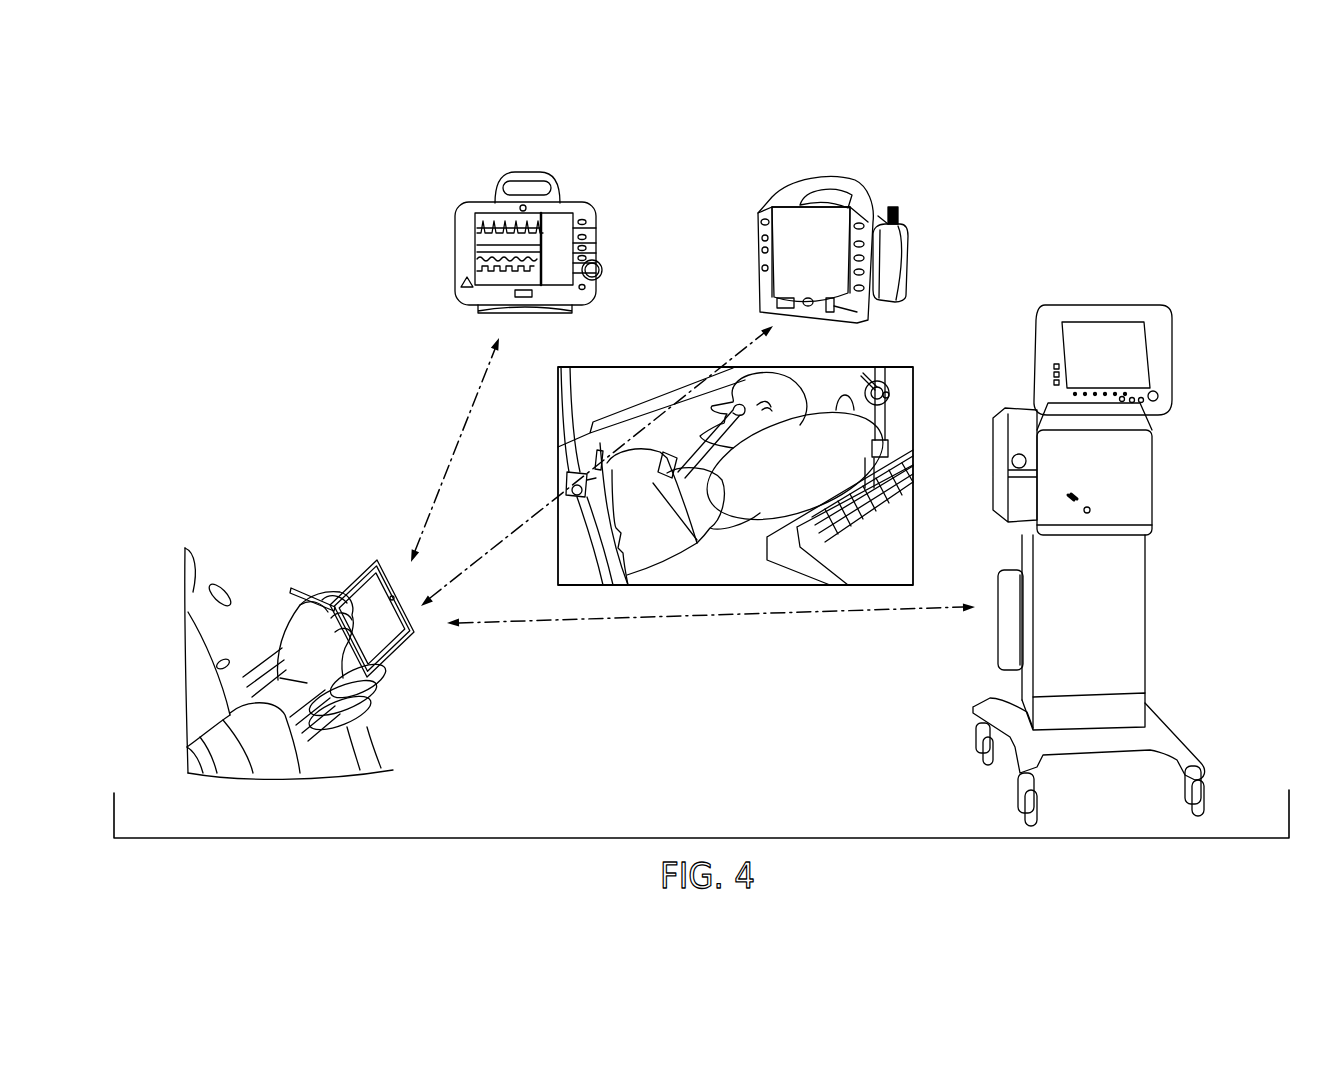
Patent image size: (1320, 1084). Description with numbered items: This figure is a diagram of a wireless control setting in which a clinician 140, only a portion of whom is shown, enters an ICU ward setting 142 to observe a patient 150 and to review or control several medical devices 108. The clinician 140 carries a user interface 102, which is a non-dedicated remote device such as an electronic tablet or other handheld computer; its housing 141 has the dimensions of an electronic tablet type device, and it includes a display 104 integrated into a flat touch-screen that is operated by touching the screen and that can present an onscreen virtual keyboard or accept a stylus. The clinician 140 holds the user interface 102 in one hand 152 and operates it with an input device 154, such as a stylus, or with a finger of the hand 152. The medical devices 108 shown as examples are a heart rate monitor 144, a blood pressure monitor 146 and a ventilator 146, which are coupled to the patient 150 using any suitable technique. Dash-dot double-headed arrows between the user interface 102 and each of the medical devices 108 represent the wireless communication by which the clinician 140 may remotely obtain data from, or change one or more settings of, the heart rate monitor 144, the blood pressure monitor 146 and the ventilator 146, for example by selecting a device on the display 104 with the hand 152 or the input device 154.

The user interface 102 is at (393, 644).
The display 104 is at (365, 594).
The medical devices 108 is at (347, 294).
The clinician 140 is at (190, 680).
The housing 141 is at (386, 565).
The ICU ward setting 142 is at (1213, 145).
The heart rate monitor 144 is at (590, 205).
The blood pressure monitor / ventilator 146 is at (870, 188).
The patient 150 is at (797, 383).
The hand 152 is at (290, 620).
The input device 154 is at (303, 588).